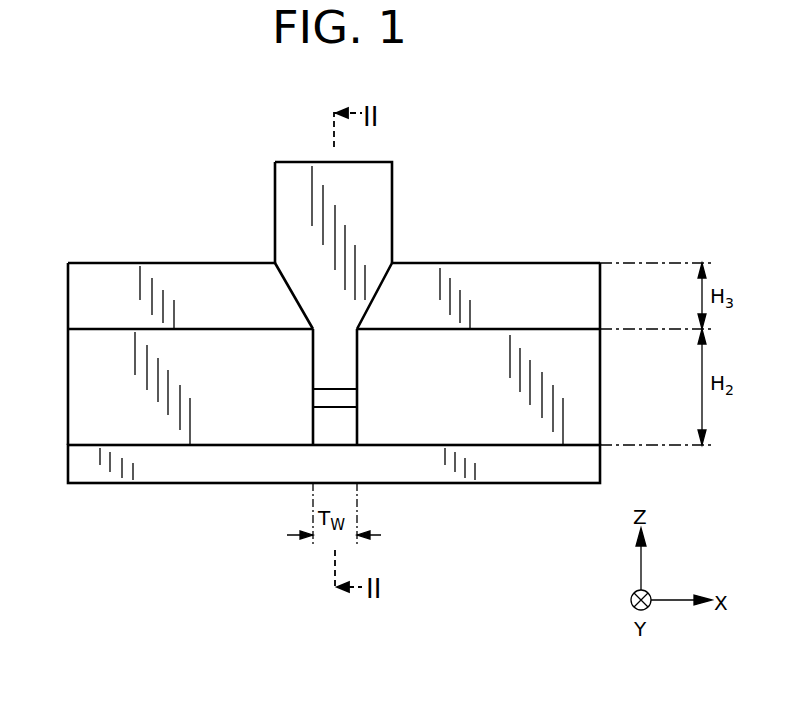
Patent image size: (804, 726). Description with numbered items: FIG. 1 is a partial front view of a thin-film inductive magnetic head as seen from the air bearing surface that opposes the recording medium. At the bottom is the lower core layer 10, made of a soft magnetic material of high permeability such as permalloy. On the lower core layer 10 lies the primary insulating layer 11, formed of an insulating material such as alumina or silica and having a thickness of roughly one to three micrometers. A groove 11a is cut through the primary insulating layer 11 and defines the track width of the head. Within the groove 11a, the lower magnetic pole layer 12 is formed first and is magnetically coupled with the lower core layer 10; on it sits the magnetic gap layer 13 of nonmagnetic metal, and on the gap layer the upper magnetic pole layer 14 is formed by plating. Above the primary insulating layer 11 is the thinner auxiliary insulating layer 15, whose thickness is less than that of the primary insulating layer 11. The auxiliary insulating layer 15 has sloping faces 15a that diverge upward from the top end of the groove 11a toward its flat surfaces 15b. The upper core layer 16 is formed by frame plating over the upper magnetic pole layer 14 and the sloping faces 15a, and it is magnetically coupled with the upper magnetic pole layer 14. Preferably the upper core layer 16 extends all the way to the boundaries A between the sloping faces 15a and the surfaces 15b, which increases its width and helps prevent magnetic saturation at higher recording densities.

The lower core layer 10 is at (92, 463).
The primary insulating layer 11 is at (93, 391).
The groove 11a is at (322, 412).
The lower magnetic pole layer 12 is at (340, 432).
The magnetic gap layer 13 is at (340, 398).
The upper magnetic pole layer 14 is at (335, 355).
The auxiliary insulating layer 15 is at (95, 291).
The sloping faces 15a is at (300, 300).
The surfaces 15b is at (115, 263).
The upper core layer 16 is at (360, 176).
The boundaries A is at (274, 262).